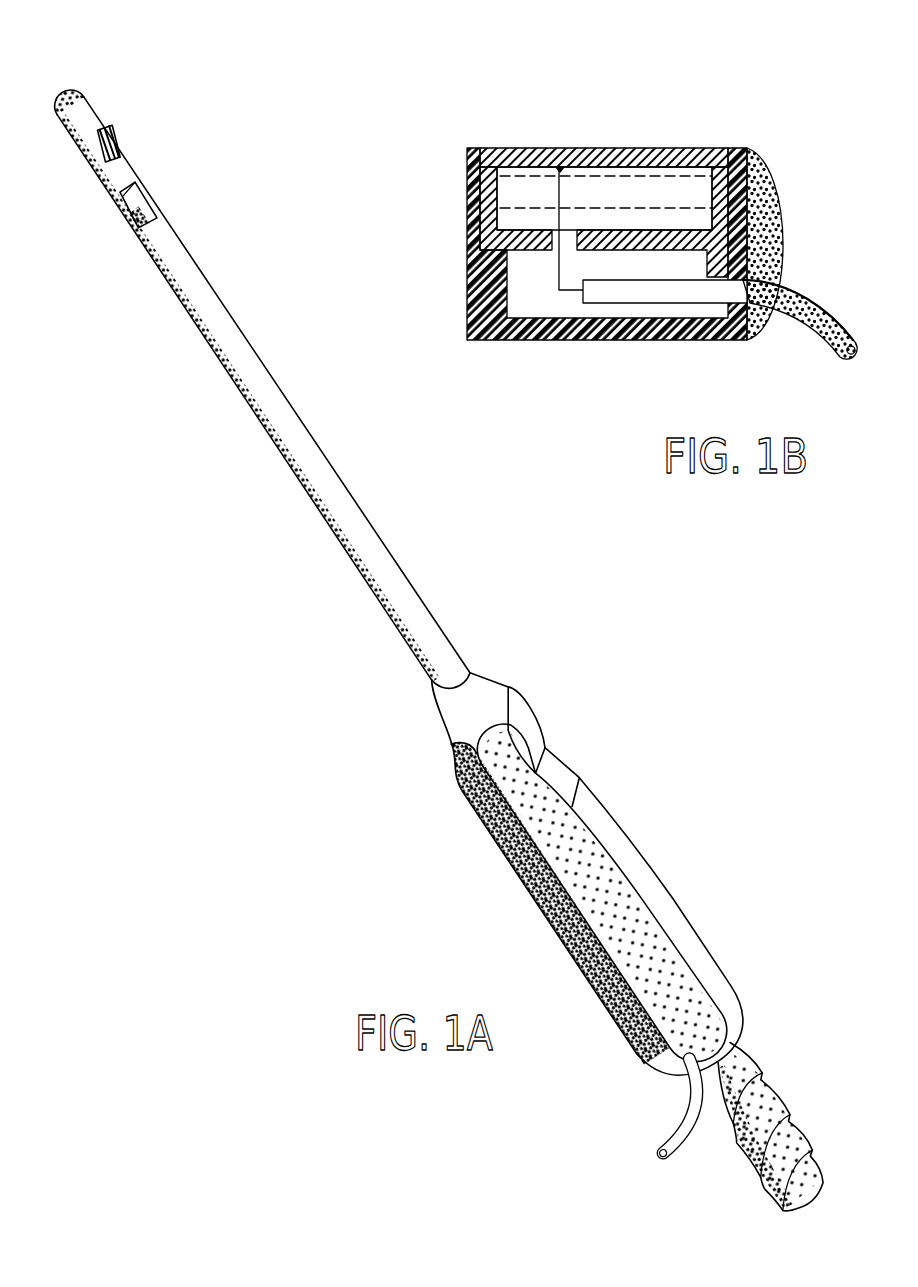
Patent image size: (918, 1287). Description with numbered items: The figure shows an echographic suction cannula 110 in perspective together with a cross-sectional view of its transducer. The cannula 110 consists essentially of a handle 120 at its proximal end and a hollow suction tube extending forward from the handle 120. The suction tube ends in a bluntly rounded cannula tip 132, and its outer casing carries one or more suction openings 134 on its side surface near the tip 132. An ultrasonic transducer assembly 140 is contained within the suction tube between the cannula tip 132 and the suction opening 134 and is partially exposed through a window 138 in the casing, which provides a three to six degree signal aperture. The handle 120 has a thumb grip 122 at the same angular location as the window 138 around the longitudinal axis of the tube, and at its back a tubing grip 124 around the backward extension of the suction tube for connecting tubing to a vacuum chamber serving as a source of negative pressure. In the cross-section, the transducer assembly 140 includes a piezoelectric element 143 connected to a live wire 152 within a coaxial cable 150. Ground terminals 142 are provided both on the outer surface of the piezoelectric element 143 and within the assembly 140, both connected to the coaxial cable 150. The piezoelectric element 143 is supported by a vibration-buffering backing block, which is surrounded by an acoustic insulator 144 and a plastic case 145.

In FIG. 1A, the echographic suction cannula 110 is at (322, 560).
In FIG. 1B, the echographic suction cannula 110 is at (614, 148).
In FIG. 1A, the handle 120 is at (637, 867).
In FIG. 1A, the thumb grip 122 is at (548, 755).
In FIG. 1A, the tubing grip 124 is at (773, 1107).
In FIG. 1A, the cannula tip 132 is at (68, 88).
In FIG. 1A, the suction opening 134 is at (140, 195).
In FIG. 1A, the window 138 is at (102, 130).
In FIG. 1A, the ultrasonic transducer assembly 140 is at (112, 148).
In FIG. 1B, the ultrasonic transducer assembly 140 is at (793, 173).
In FIG. 1B, the ground terminals 142 is at (737, 146).
In FIG. 1B, the piezoelectric element 143 is at (533, 190).
In FIG. 1B, the acoustic insulator 144 is at (482, 188).
In FIG. 1B, the plastic case 145 is at (480, 298).
In FIG. 1A, the coaxial cable 150 is at (688, 1113).
In FIG. 1B, the coaxial cable 150 is at (830, 313).
In FIG. 1B, the live wire 152 is at (557, 292).